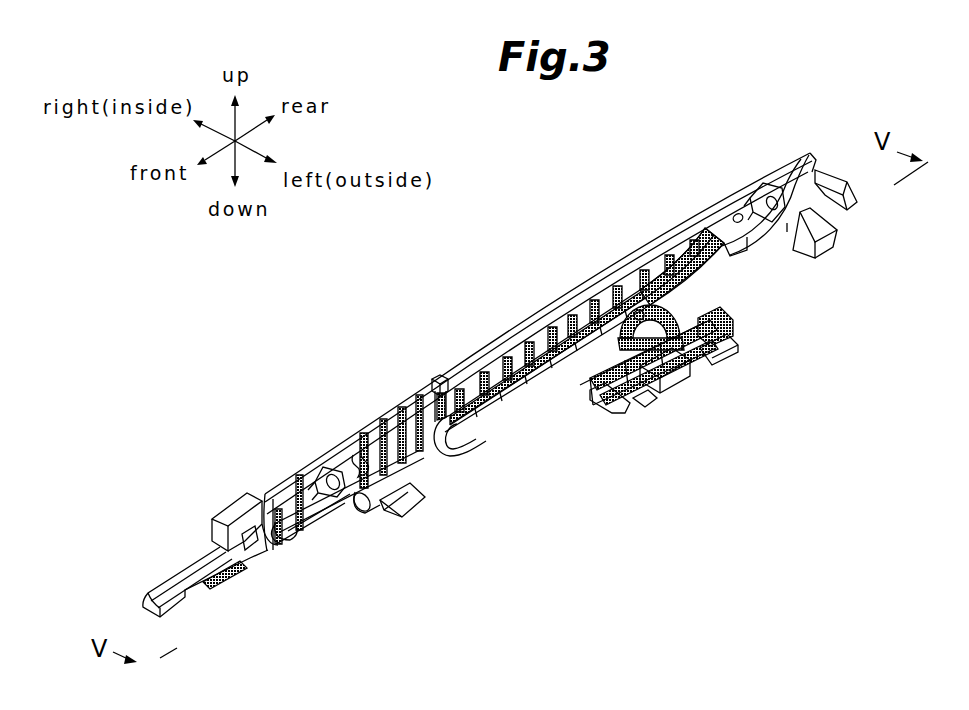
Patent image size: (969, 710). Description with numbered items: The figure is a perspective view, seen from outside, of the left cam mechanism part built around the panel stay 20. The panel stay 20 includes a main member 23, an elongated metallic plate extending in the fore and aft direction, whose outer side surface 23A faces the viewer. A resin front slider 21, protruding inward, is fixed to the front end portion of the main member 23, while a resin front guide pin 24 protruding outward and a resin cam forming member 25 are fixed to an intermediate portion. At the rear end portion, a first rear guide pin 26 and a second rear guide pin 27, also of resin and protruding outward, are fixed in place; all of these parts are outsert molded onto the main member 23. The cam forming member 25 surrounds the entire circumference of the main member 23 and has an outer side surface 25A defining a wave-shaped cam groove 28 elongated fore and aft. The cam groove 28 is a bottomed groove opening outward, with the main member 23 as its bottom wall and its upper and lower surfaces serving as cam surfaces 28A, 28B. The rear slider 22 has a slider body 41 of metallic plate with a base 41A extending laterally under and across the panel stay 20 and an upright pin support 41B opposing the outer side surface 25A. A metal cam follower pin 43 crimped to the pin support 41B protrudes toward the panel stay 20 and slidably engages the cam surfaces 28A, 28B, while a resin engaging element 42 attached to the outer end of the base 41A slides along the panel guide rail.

The panel stay 20 is at (530, 238).
The front slider 21 is at (238, 505).
The rear slider 22 is at (716, 311).
The main member 23 is at (390, 410).
The outer side surface 23A is at (427, 408).
The front guide pin 24 is at (423, 500).
The cam forming member 25 is at (518, 330).
The outer side surface 25A is at (517, 410).
The first rear guide pin 26 is at (823, 247).
The second rear guide pin 27 is at (853, 200).
The cam groove 28 is at (500, 436).
The cam surface 28A is at (603, 308).
The cam surface 28B is at (463, 450).
The slider body 41 is at (608, 376).
The base 41A is at (607, 404).
The pin support 41B is at (698, 364).
The engaging element 42 is at (731, 322).
The cam follower pin 43 is at (663, 383).